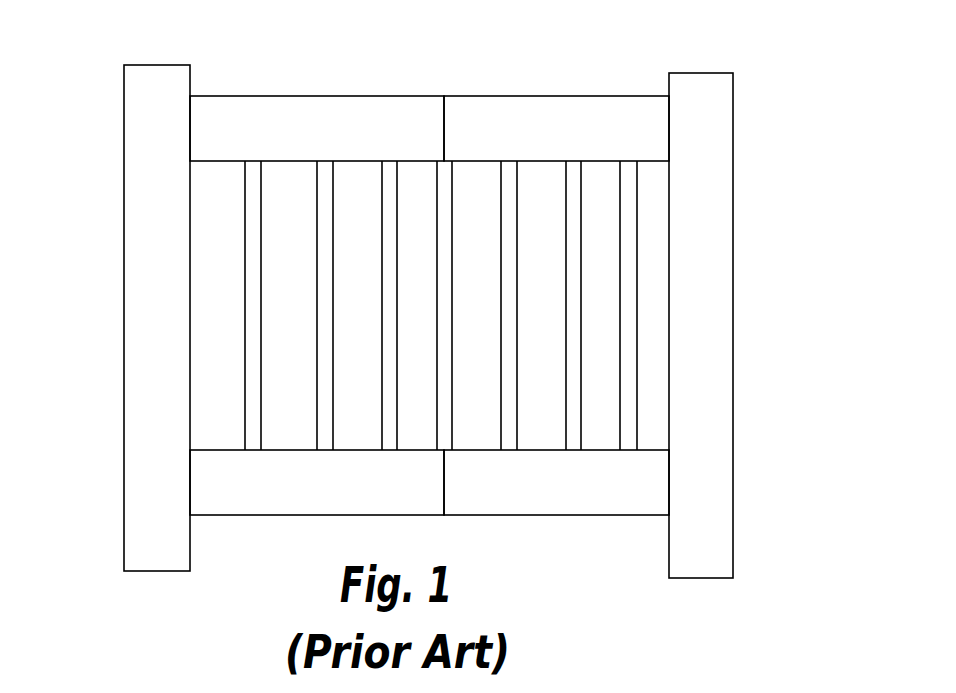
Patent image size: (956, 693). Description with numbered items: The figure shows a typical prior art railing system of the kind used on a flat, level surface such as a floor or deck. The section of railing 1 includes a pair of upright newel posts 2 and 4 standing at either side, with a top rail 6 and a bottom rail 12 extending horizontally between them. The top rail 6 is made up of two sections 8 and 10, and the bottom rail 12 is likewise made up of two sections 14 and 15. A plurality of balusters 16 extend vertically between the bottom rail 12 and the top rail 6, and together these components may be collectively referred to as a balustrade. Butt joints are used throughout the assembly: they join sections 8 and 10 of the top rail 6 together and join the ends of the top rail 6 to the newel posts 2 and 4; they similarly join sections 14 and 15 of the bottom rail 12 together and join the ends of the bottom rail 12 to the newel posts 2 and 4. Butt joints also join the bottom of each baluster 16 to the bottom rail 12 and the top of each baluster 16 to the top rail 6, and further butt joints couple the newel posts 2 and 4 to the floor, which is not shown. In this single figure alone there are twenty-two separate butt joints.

The railing 1 is at (788, 200).
The newel post 2 is at (142, 434).
The newel post 4 is at (700, 449).
The top rail 6 is at (429, 88).
The top rail section 8 is at (317, 128).
The top rail section 10 is at (556, 128).
The bottom rail 12 is at (429, 561).
The bottom rail section 14 is at (317, 482).
The bottom rail section 15 is at (556, 482).
The baluster 16 is at (260, 383).